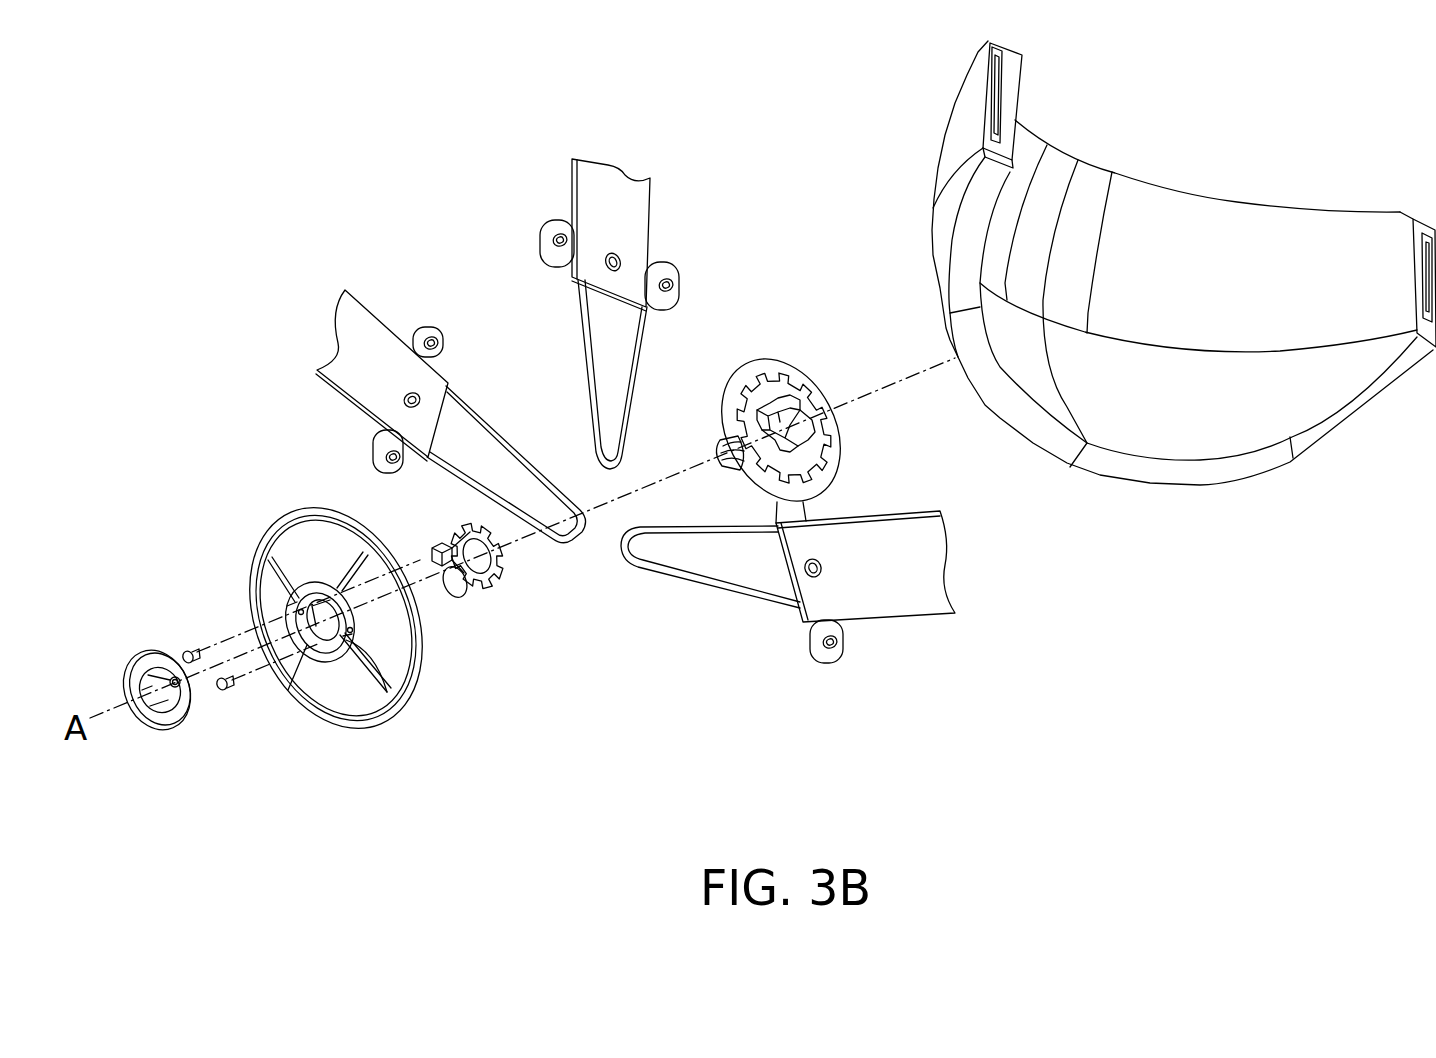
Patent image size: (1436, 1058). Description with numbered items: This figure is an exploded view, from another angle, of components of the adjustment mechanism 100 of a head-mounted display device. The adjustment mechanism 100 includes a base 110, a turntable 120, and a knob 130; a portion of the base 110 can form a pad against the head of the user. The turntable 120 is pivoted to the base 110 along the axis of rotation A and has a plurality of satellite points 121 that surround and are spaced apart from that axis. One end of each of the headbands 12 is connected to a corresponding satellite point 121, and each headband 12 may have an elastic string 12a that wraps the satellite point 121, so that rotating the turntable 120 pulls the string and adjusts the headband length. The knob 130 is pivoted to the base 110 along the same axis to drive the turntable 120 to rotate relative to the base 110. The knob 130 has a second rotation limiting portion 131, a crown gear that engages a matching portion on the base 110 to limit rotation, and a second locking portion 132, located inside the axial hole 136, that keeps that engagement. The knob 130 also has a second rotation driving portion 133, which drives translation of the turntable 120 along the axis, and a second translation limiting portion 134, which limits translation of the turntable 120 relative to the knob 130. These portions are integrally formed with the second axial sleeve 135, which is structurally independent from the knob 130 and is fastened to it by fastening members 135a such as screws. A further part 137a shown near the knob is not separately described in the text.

The adjustment mechanism 100 is at (1252, 117).
The base 110 is at (957, 126).
The headbands 12 is at (608, 177).
The elastic string 12a is at (488, 435).
The turntable 120 is at (765, 362).
The satellite points 121 is at (721, 458).
The knob 130 is at (263, 543).
The second rotation limiting portion 131 is at (500, 542).
The second locking portion 132 is at (383, 688).
The second rotation driving portion 133 is at (430, 545).
The second translation limiting portion 134 is at (473, 580).
The second axial sleeve 135 is at (442, 590).
The fastening members 135a is at (185, 655).
The axial hole 136 is at (307, 645).
The cap 137a is at (172, 730).